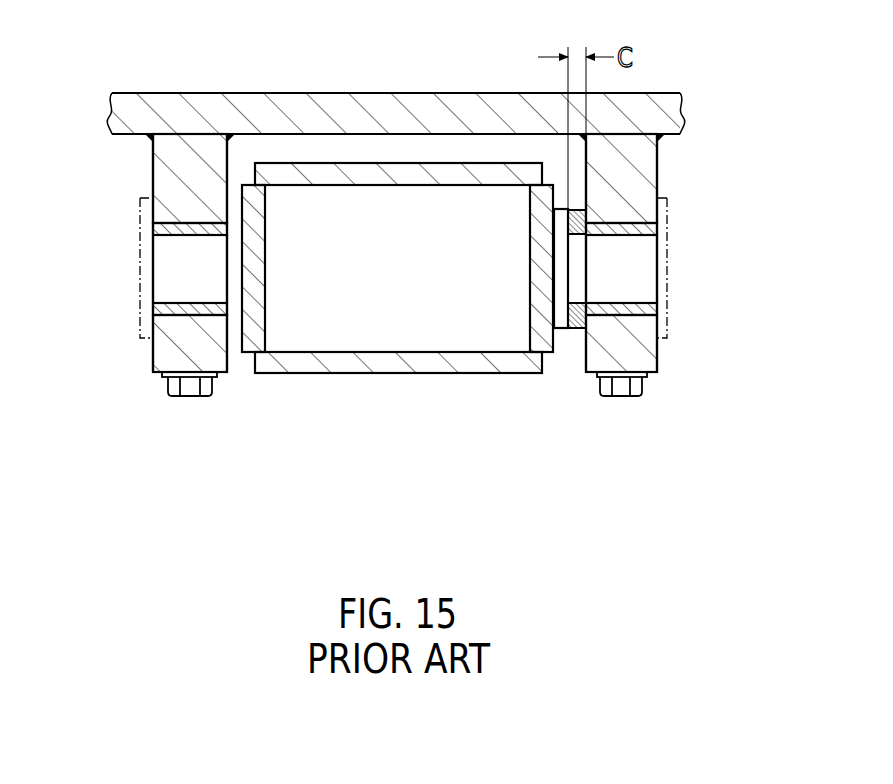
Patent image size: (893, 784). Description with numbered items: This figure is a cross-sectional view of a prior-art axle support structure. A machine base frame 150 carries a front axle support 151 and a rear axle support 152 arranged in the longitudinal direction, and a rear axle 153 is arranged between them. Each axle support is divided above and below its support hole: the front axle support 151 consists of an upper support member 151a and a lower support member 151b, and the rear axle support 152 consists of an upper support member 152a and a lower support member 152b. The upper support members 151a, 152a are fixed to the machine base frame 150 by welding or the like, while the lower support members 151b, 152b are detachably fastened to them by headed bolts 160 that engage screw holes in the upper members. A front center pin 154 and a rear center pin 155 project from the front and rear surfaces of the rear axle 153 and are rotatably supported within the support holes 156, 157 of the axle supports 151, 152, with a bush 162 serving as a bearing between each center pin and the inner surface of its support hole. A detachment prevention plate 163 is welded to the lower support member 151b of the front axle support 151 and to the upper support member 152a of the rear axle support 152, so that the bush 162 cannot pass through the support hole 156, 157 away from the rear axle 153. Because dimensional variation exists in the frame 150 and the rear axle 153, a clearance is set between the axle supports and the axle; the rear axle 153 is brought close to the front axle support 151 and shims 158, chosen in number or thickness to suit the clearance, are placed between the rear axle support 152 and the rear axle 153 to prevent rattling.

The machine base frame 150 is at (390, 93).
The front axle support 151 is at (133, 270).
The upper support member 151a is at (175, 185).
The lower support member 151b is at (160, 340).
The rear axle support 152 is at (678, 268).
The upper support member 152a is at (634, 186).
The lower support member 152b is at (648, 358).
The rear axle 153 is at (393, 376).
The front center pin 154 is at (175, 275).
The rear center pin 155 is at (635, 271).
The support hole 156 is at (165, 236).
The support hole 157 is at (630, 233).
The shim 158 is at (578, 330).
The headed bolt 160 is at (187, 392).
The bush 162 is at (160, 306).
The detachment prevention plate 163 is at (140, 335).